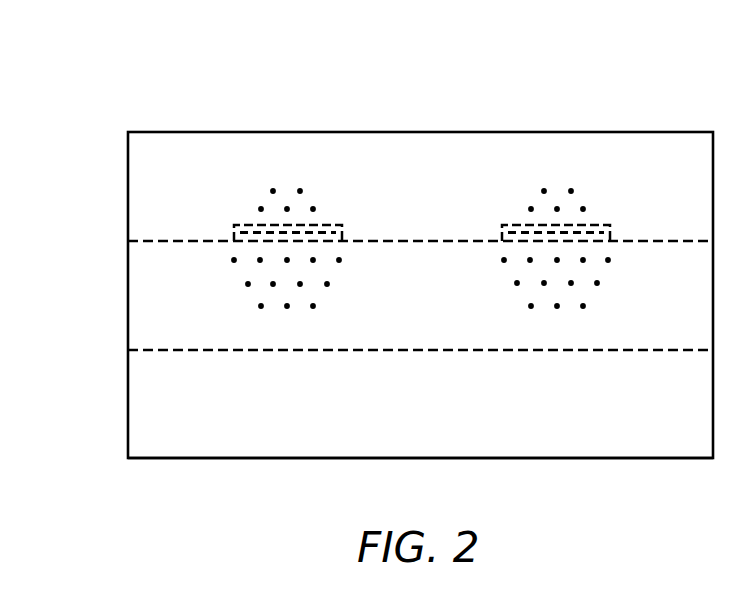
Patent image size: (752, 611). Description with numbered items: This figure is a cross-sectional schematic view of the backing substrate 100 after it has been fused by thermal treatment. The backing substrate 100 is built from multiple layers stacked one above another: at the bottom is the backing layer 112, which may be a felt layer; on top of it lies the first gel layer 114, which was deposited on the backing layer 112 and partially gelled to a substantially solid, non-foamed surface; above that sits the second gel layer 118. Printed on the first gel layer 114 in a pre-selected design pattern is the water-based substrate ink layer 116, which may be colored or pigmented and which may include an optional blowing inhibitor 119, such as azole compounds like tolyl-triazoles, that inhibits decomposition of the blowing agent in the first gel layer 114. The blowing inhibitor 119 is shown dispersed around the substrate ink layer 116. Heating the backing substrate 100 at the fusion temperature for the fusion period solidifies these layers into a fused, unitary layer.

The backing substrate 100 is at (420, 242).
The backing layer 112 is at (372, 416).
The first gel layer 114 is at (372, 310).
The substrate ink layer 116 is at (388, 211).
The second gel layer 118 is at (372, 202).
The blowing inhibitor 119 is at (421, 271).